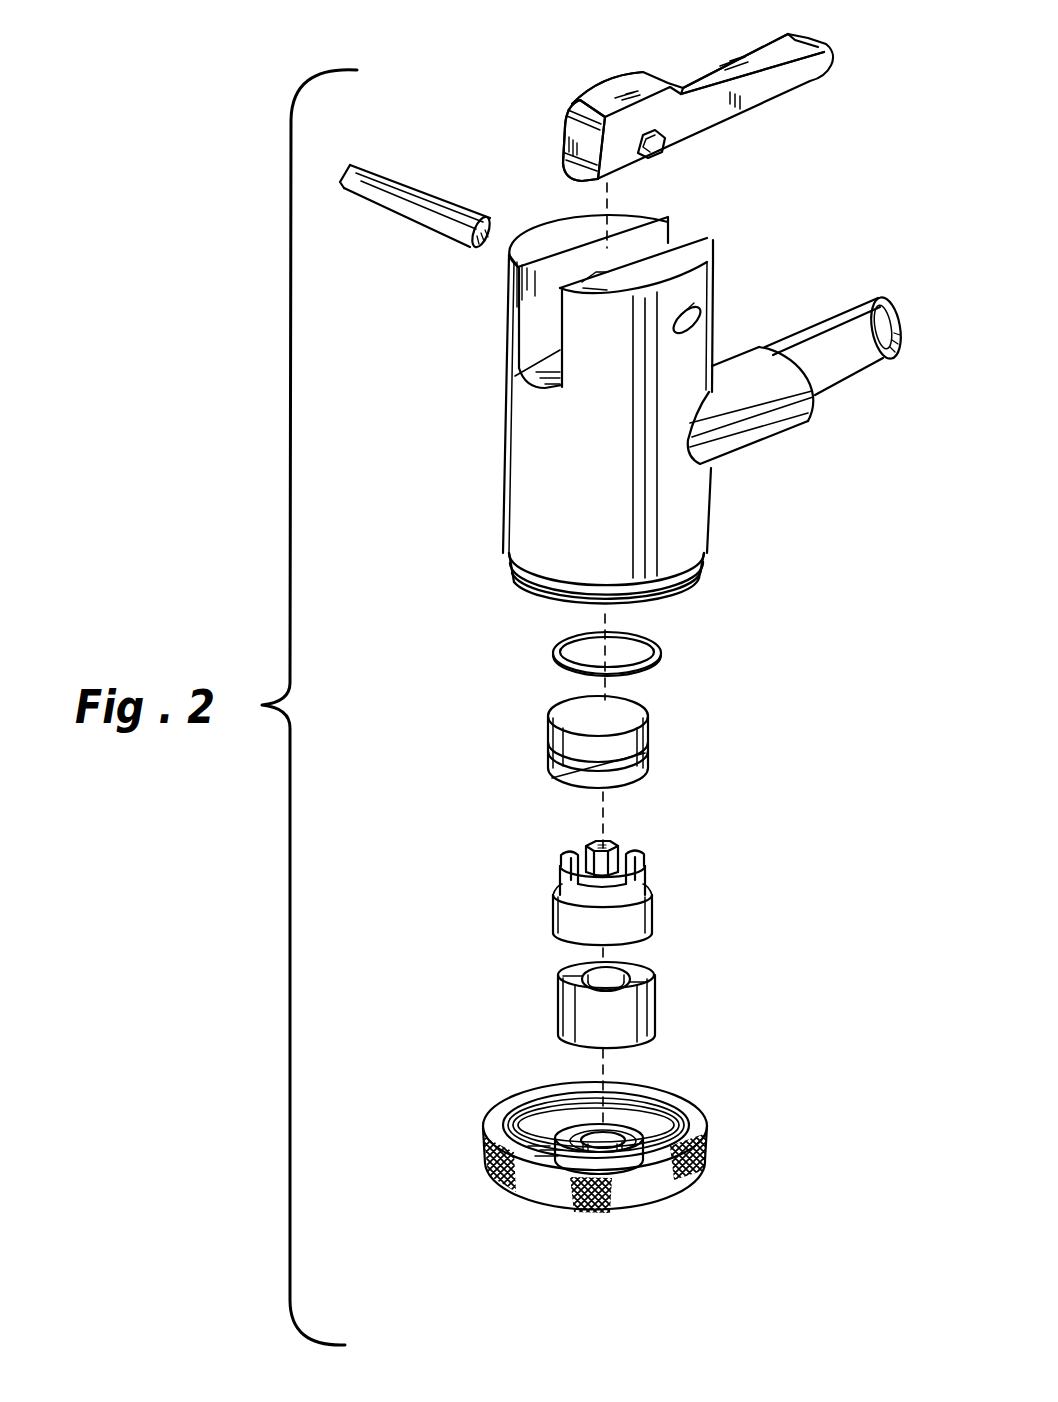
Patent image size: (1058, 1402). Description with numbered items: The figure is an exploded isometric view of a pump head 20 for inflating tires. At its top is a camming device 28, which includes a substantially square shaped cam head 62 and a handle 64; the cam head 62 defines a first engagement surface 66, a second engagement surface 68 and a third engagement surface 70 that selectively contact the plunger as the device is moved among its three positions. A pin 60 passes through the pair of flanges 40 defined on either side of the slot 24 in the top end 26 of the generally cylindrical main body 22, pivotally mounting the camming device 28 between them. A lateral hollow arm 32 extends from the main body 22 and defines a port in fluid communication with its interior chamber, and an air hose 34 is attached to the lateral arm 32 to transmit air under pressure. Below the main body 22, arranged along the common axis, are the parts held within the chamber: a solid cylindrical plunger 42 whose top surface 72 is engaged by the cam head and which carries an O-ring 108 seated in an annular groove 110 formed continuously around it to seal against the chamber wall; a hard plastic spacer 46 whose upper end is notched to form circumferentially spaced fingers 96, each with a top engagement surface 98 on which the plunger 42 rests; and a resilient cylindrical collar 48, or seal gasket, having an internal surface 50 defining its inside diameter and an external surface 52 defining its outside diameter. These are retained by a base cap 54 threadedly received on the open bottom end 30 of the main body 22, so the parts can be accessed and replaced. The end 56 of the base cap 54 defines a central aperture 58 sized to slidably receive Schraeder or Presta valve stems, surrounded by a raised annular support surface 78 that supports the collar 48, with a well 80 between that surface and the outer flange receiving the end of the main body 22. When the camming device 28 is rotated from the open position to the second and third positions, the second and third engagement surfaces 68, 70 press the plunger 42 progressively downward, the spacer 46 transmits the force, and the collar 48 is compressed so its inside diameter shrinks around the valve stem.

The pump head 20 is at (726, 252).
The main body 22 is at (537, 455).
The slot 24 is at (637, 221).
The top end 26 is at (520, 255).
The camming device 28 is at (806, 91).
The bottom end 30 is at (525, 548).
The lateral hollow arm 32 is at (743, 423).
The air hose 34 is at (852, 330).
The flanges 40 is at (673, 270).
The plunger 42 is at (627, 740).
The spacer 46 is at (633, 925).
The cylindrical collar 48 is at (658, 1012).
The internal surface 50 is at (647, 967).
The external surface 52 is at (580, 1012).
The base cap 54 is at (652, 1211).
The end 56 is at (540, 1153).
The aperture 58 is at (667, 1097).
The pin 60 is at (381, 172).
The cam head 62 is at (597, 155).
The handle 64 is at (757, 58).
The first engagement surface 66 is at (655, 163).
The second engagement surface 68 is at (567, 118).
The third engagement surface 70 is at (632, 78).
The top surface 72 is at (630, 718).
The raised annular support surface 78 is at (572, 1137).
The well 80 is at (530, 1138).
The fingers 96 is at (645, 877).
The top engagement surface 98 is at (633, 846).
The O-ring 108 is at (657, 648).
The annular groove 110 is at (555, 780).